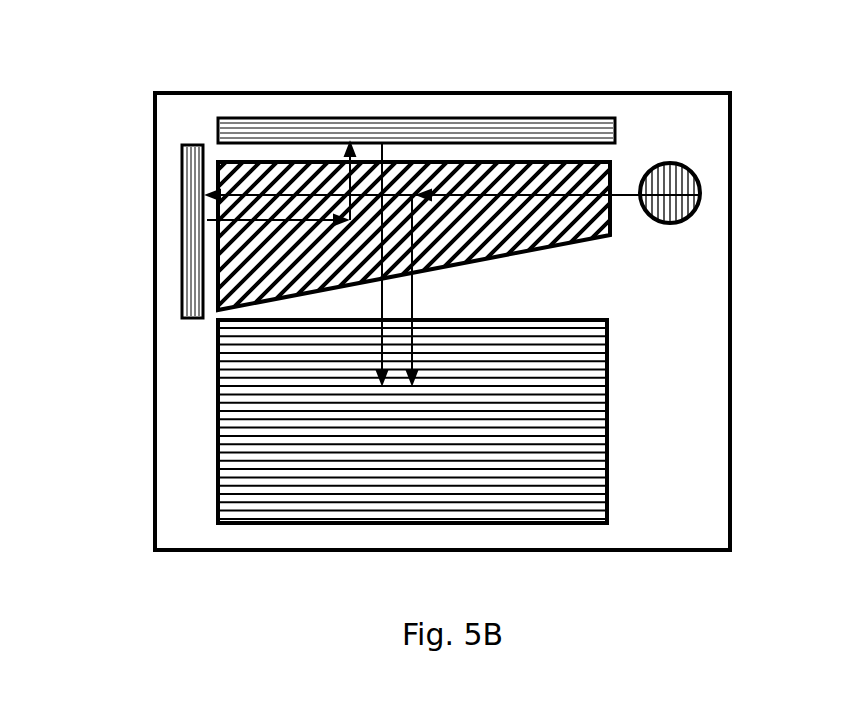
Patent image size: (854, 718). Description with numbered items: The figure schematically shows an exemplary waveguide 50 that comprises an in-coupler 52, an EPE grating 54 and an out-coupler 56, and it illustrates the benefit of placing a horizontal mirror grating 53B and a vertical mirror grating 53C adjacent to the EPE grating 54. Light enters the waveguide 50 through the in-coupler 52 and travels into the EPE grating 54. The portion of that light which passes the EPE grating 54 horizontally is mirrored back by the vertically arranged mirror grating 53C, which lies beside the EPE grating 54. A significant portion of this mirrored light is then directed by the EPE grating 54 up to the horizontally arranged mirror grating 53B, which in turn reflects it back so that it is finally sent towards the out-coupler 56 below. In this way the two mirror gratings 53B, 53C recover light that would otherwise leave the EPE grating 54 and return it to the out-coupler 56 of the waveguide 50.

The waveguide 50 is at (222, 93).
The in-coupler 52 is at (670, 163).
The horizontal mirror grating 53B is at (480, 118).
The vertical mirror grating 53C is at (182, 250).
The EPE grating 54 is at (225, 160).
The out-coupler 56 is at (218, 480).